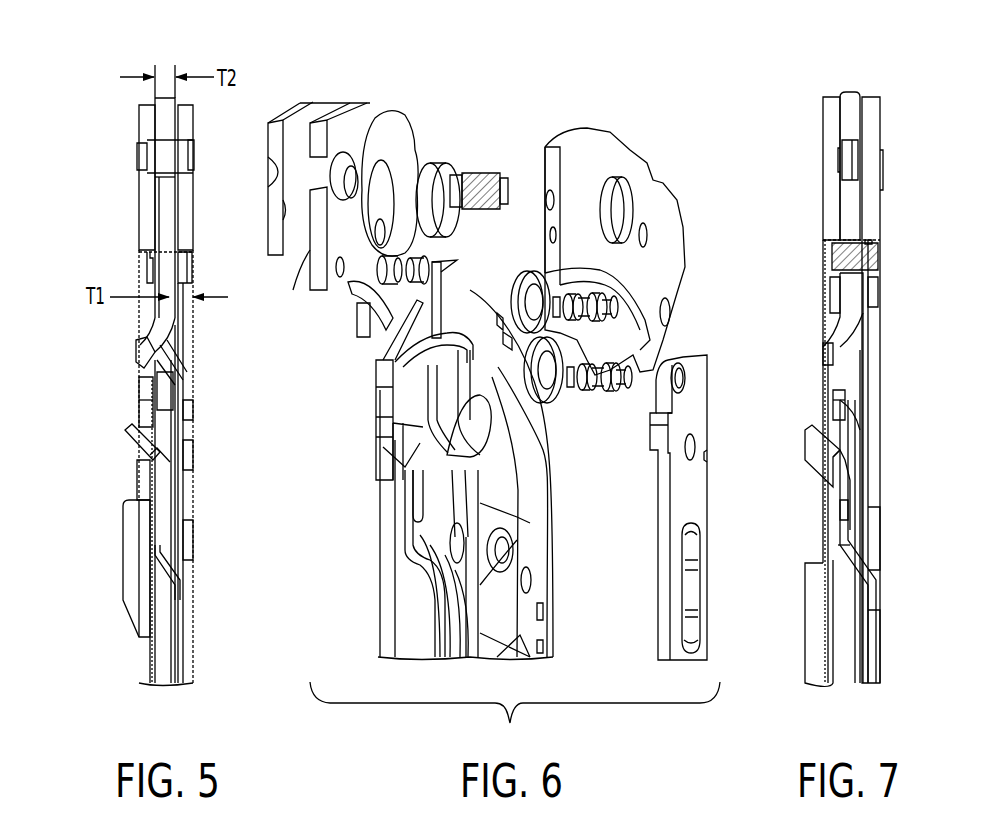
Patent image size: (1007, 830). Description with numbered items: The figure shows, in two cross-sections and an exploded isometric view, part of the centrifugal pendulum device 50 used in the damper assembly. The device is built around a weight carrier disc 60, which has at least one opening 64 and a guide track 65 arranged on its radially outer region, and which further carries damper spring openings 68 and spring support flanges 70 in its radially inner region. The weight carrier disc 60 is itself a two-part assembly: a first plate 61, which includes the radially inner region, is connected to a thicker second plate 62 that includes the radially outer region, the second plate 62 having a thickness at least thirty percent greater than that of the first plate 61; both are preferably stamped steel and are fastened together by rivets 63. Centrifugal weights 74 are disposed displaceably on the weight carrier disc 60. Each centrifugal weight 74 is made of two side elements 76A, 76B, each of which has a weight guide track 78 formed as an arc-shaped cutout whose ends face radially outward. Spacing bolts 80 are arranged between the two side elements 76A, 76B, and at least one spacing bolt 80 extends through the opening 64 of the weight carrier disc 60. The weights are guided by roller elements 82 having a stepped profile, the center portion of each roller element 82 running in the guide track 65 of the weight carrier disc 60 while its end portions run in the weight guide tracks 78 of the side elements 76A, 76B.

In FIG. 5, the centrifugal pendulum device 50 is at (96, 135).
In FIG. 5, the weight carrier disc 60 is at (152, 310).
In FIG. 7, the weight carrier disc 60 is at (833, 300).
In FIG. 5, the first plate 61 is at (178, 320).
In FIG. 6, the first plate 61 is at (540, 485).
In FIG. 7, the first plate 61 is at (865, 352).
In FIG. 5, the second plate 62 is at (165, 218).
In FIG. 6, the second plate 62 is at (392, 127).
In FIG. 7, the second plate 62 is at (848, 113).
In FIG. 5, the rivets 63 is at (190, 266).
In FIG. 6, the rivets 63 is at (417, 267).
In FIG. 7, the rivets 63 is at (875, 253).
In FIG. 5, the opening 64 is at (160, 178).
In FIG. 6, the opening 64 is at (371, 299).
In FIG. 6, the guide track 65 is at (388, 167).
In FIG. 5, the damper spring openings 68 is at (126, 392).
In FIG. 7, the damper spring openings 68 is at (810, 412).
In FIG. 5, the spring support flanges 70 is at (140, 355).
In FIG. 7, the spring support flanges 70 is at (820, 360).
In FIG. 5, the centrifugal weights 74 is at (138, 197).
In FIG. 5, the side element 76A is at (183, 127).
In FIG. 6, the side element 76A is at (610, 130).
In FIG. 7, the side element 76A is at (870, 150).
In FIG. 5, the side element 76B is at (145, 120).
In FIG. 6, the side element 76B is at (300, 118).
In FIG. 7, the side element 76B is at (830, 220).
In FIG. 6, the weight guide tracks 78 is at (297, 292).
In FIG. 5, the spacing bolts 80 is at (145, 155).
In FIG. 6, the spacing bolts 80 is at (478, 177).
In FIG. 7, the spacing bolts 80 is at (850, 165).
In FIG. 6, the roller elements 82 is at (433, 177).